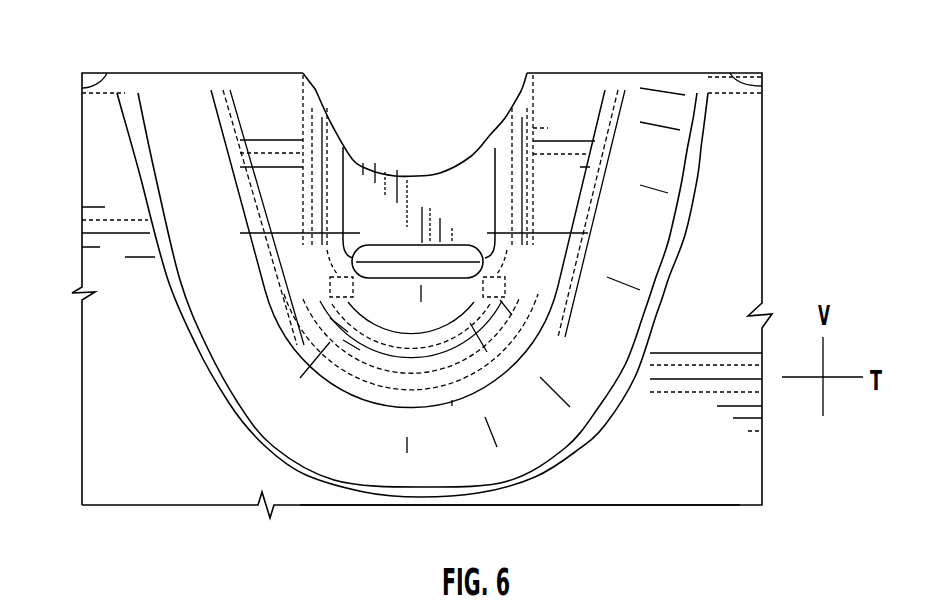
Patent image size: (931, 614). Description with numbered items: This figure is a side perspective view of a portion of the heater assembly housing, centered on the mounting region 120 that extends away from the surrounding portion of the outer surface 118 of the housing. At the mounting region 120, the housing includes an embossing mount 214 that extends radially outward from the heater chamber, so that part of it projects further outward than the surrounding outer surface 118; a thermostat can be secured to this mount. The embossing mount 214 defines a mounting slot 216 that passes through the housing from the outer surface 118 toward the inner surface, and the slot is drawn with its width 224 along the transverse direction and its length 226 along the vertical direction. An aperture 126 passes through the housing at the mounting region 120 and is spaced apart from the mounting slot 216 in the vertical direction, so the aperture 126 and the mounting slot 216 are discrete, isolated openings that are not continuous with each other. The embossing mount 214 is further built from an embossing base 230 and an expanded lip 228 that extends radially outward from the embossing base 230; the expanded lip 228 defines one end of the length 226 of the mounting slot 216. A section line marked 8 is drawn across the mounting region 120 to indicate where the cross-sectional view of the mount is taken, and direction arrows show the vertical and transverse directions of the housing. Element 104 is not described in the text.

The body 104 is at (743, 185).
The outer surface 118 is at (740, 490).
The mounting region 120 is at (180, 185).
The aperture 126 is at (434, 73).
The embossing mount 214 is at (495, 318).
The mounting slot 216 is at (380, 267).
The width 224 is at (457, 262).
The length 226 is at (421, 302).
The expanded lip 228 is at (357, 312).
The embossing base 230 is at (350, 183).
The section line 8- 8 is at (587, 275).